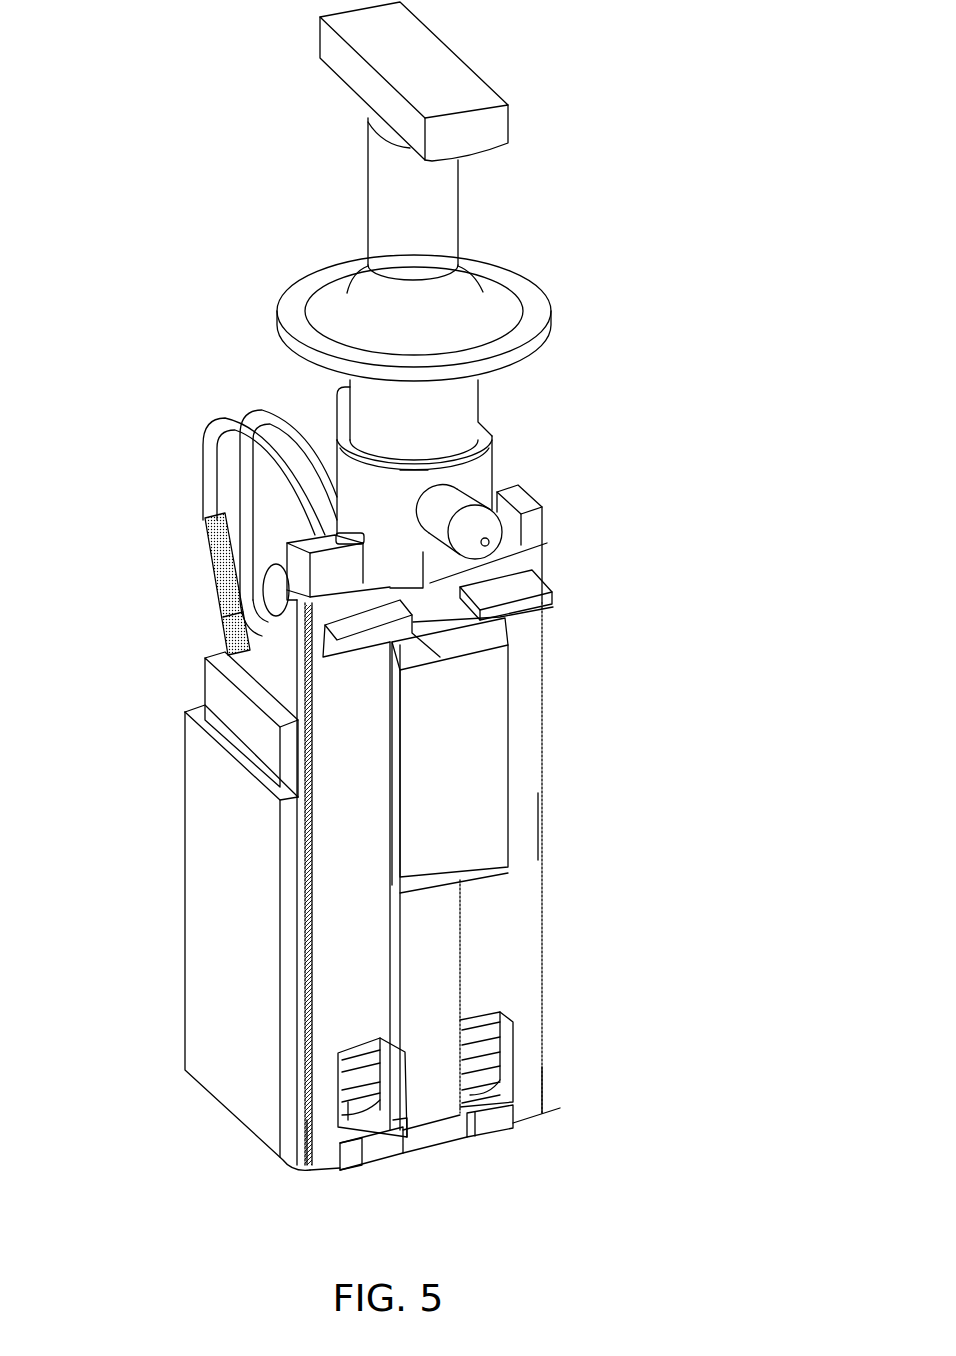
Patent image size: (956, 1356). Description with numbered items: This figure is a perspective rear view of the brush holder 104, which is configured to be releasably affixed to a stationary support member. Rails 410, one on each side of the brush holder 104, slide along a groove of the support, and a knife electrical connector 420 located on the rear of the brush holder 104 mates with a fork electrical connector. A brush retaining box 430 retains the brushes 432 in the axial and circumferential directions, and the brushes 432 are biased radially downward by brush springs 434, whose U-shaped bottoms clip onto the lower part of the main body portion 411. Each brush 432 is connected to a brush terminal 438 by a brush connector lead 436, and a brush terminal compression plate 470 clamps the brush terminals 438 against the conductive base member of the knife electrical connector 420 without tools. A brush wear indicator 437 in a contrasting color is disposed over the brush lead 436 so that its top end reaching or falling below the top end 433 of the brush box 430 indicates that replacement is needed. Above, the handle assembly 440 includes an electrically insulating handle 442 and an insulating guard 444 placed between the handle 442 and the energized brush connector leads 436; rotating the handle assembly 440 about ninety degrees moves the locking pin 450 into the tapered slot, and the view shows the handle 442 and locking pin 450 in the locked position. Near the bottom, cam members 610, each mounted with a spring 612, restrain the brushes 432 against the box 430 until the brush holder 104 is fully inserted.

The brush holder 104 is at (547, 143).
The handle 442 is at (320, 38).
The handle assembly 440 is at (354, 220).
The guard 444 is at (552, 310).
The brush connector lead 436 is at (205, 447).
The brush wear indicator 437 is at (208, 540).
The brush spring 434 is at (232, 620).
The brush terminal compression plate 470 is at (533, 497).
The locking pin 450 is at (505, 541).
The brush terminal 438 is at (553, 598).
The brush 432 is at (205, 680).
The top end of brush box 433 is at (205, 724).
The brush retaining box 430 is at (259, 930).
The knife electrical connector 420 is at (471, 755).
The rail 410 is at (530, 920).
The main body portion 411 is at (520, 1017).
The cam member 610 is at (383, 1150).
The spring 612 is at (345, 1153).